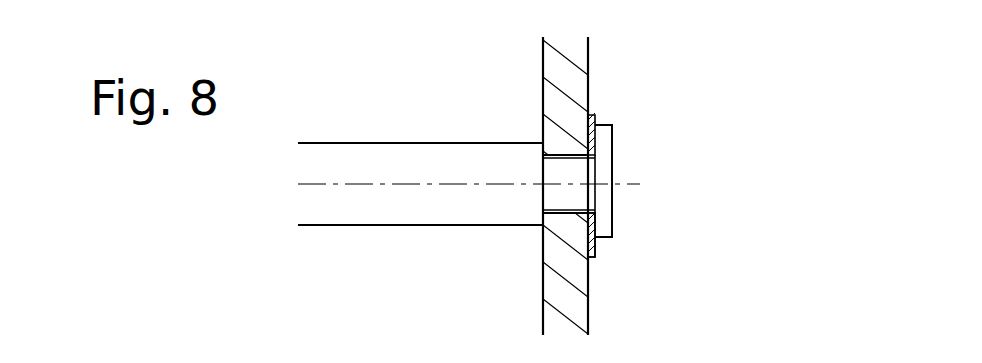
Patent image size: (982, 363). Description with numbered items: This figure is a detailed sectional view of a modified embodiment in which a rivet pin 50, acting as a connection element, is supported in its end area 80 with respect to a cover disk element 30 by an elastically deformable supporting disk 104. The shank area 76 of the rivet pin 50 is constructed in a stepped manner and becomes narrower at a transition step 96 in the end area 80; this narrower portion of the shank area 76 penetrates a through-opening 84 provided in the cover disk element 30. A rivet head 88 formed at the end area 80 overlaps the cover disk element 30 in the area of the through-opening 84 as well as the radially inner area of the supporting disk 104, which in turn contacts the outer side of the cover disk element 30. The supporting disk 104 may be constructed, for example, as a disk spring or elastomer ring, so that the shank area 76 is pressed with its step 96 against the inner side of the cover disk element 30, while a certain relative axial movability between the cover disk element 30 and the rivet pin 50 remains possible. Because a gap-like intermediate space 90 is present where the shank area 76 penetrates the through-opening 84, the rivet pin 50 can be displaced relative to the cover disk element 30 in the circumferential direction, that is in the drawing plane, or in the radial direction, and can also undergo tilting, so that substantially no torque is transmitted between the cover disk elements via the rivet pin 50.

The cover disk element 30 is at (588, 60).
The rivet pin 50 is at (350, 247).
The shank area 76 is at (394, 143).
The end area 80 is at (659, 110).
The through-opening 84 is at (568, 153).
The rivet head 88 is at (612, 160).
The gap-like intermediate space 90 is at (596, 253).
The transition step 96 is at (555, 218).
The supporting disk 104 is at (569, 220).